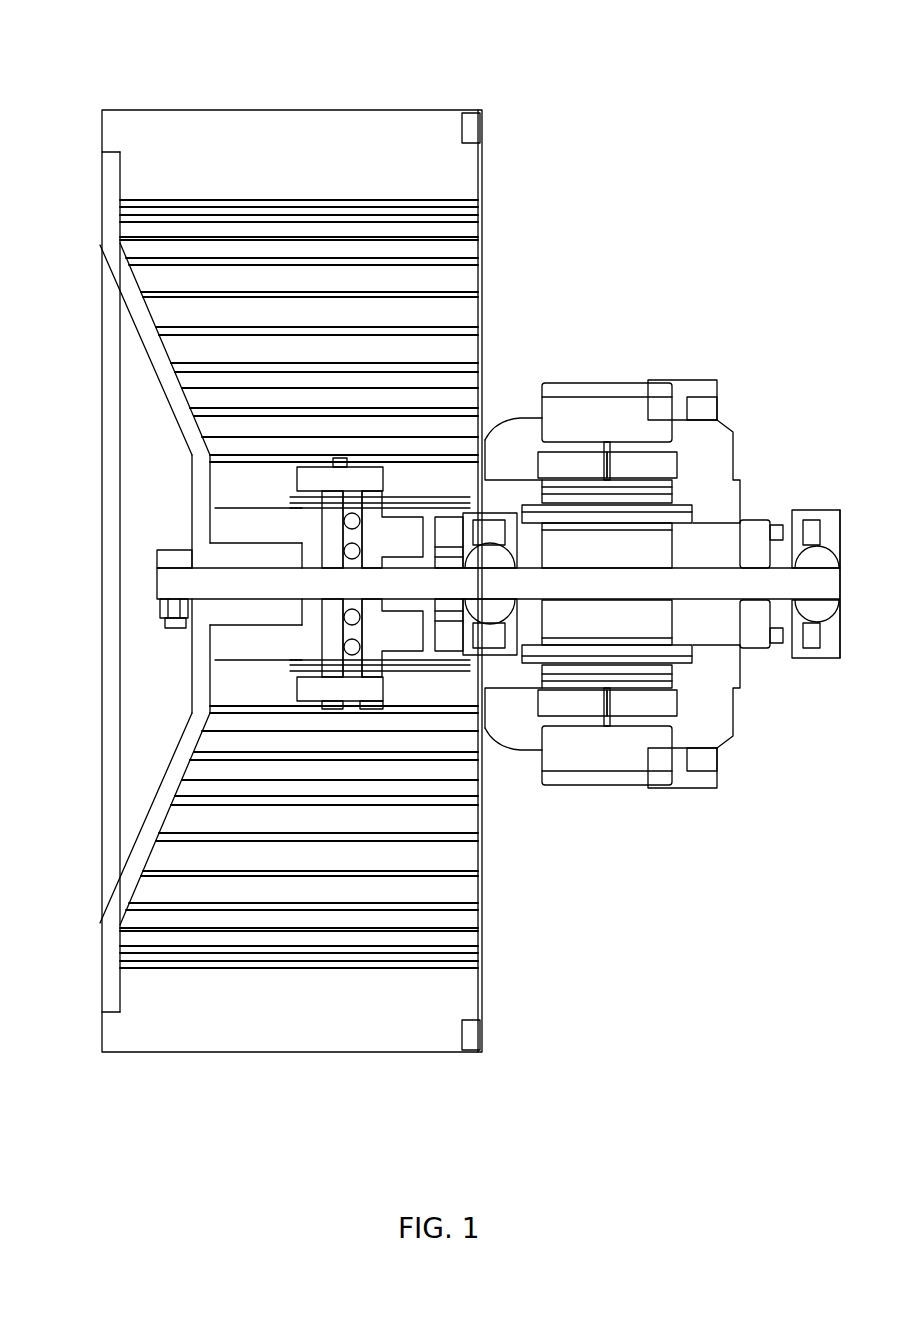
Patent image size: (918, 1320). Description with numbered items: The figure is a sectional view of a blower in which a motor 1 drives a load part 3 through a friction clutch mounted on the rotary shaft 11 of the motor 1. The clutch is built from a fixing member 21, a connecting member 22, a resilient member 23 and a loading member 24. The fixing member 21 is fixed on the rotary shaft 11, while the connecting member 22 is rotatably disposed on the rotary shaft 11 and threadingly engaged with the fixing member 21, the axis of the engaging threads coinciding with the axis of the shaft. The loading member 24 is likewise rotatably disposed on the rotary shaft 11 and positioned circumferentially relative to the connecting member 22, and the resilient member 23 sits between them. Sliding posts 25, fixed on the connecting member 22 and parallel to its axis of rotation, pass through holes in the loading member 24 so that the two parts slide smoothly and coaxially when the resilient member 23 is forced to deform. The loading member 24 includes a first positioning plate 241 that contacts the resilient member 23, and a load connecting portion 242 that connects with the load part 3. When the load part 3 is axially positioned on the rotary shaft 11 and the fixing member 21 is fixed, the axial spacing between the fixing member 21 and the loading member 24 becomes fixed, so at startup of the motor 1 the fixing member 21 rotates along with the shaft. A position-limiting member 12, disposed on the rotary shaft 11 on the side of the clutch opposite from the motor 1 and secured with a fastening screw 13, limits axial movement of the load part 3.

The motor 1 is at (696, 368).
The rotary shaft 11 is at (480, 590).
The position-limiting member 12 is at (155, 612).
The fastening screw 13 is at (176, 624).
The fixing member 21 is at (430, 652).
The connecting member 22 is at (395, 530).
The resilient member 23 is at (350, 505).
The loading member 24 is at (213, 472).
The first positioning plate 241 is at (324, 512).
The load connecting portion 242 is at (232, 525).
The sliding posts 25 is at (325, 478).
The load part 3 is at (458, 1060).